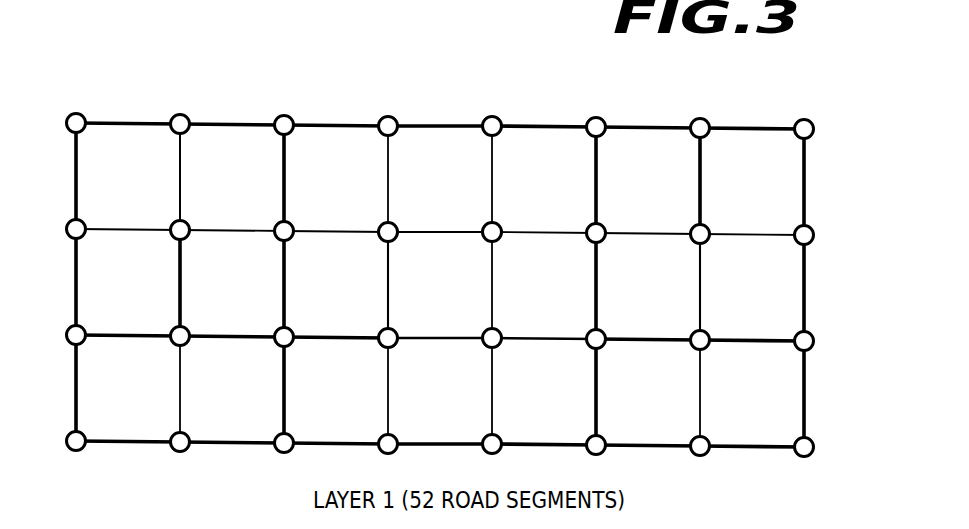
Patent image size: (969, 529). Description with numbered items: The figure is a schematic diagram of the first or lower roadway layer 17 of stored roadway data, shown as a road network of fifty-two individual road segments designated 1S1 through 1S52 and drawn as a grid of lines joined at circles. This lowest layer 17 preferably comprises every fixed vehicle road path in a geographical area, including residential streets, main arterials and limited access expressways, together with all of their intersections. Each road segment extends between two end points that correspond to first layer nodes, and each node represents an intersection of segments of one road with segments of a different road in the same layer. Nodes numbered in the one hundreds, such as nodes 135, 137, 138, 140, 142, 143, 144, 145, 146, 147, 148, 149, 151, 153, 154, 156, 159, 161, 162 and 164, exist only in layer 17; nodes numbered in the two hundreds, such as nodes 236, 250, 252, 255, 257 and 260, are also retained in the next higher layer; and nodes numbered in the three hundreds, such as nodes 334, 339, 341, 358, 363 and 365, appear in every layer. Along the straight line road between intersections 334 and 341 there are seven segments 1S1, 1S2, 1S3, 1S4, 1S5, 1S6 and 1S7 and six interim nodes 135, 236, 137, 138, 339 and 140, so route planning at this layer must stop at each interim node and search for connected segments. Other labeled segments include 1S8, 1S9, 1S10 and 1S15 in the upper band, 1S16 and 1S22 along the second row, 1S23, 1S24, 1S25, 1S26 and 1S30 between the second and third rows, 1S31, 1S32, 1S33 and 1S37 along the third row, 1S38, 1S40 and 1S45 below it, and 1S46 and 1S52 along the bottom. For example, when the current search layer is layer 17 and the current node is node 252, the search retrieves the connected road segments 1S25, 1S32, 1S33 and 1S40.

The first or lower roadway layer 17 is at (757, 76).
The node 334 is at (77, 108).
The node 135 is at (181, 109).
The node 236 is at (284, 110).
The node 137 is at (388, 111).
The node 138 is at (492, 111).
The node 339 is at (596, 112).
The node 140 is at (700, 113).
The node 341 is at (805, 114).
The node 142 is at (96, 219).
The node 143 is at (202, 220).
The node 144 is at (305, 221).
The node 145 is at (408, 221).
The node 146 is at (513, 221).
The node 147 is at (616, 222).
The node 148 is at (721, 223).
The node 149 is at (825, 224).
The node 250 is at (96, 324).
The node 151 is at (201, 325).
The node 252 is at (305, 326).
The node 153 is at (408, 326).
The node 154 is at (513, 326).
The node 255 is at (616, 327).
The node 156 is at (721, 328).
The node 257 is at (825, 329).
The node 358 is at (77, 459).
The node 159 is at (182, 459).
The node 260 is at (287, 460).
The node 161 is at (390, 461).
The node 162 is at (494, 461).
The node 363 is at (598, 462).
The node 164 is at (701, 462).
The node 365 is at (805, 463).
The road segment 1S1 is at (134, 126).
The road segment 1S2 is at (240, 127).
The road segment 1S3 is at (344, 128).
The road segment 1S4 is at (444, 129).
The road segment 1S5 is at (548, 129).
The road segment 1S6 is at (656, 130).
The road segment 1S7 is at (758, 131).
The road segment 1S8 is at (77, 190).
The road segment 1S9 is at (181, 190).
The road segment 1S10 is at (285, 191).
The road segment 1S15 is at (805, 178).
The road segment 1S16 is at (132, 232).
The road segment 1S22 is at (750, 236).
The road segment 1S23 is at (77, 289).
The road segment 1S24 is at (181, 290).
The road segment 1S25 is at (285, 291).
The road segment 1S26 is at (389, 290).
The road segment 1S30 is at (806, 282).
The road segment 1S31 is at (135, 338).
The road segment 1S32 is at (240, 339).
The road segment 1S33 is at (345, 340).
The road segment 1S37 is at (749, 343).
The road segment 1S38 is at (77, 399).
The road segment 1S40 is at (285, 399).
The road segment 1S45 is at (806, 389).
The road segment 1S46 is at (133, 444).
The road segment 1S52 is at (753, 449).